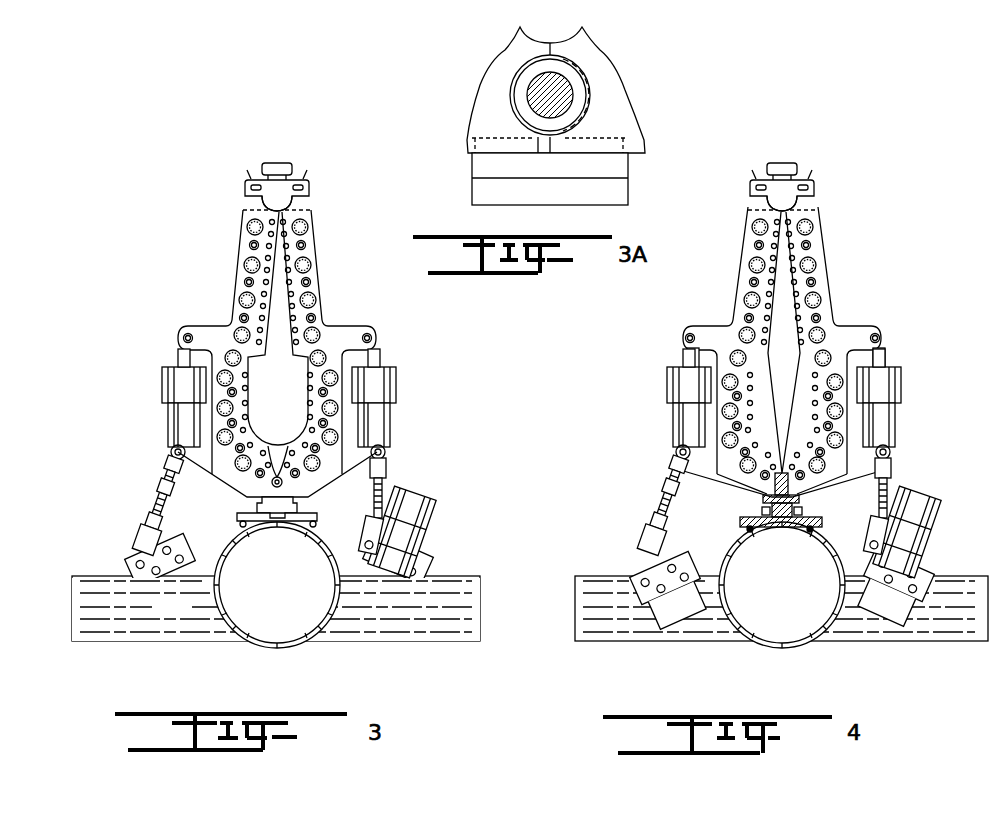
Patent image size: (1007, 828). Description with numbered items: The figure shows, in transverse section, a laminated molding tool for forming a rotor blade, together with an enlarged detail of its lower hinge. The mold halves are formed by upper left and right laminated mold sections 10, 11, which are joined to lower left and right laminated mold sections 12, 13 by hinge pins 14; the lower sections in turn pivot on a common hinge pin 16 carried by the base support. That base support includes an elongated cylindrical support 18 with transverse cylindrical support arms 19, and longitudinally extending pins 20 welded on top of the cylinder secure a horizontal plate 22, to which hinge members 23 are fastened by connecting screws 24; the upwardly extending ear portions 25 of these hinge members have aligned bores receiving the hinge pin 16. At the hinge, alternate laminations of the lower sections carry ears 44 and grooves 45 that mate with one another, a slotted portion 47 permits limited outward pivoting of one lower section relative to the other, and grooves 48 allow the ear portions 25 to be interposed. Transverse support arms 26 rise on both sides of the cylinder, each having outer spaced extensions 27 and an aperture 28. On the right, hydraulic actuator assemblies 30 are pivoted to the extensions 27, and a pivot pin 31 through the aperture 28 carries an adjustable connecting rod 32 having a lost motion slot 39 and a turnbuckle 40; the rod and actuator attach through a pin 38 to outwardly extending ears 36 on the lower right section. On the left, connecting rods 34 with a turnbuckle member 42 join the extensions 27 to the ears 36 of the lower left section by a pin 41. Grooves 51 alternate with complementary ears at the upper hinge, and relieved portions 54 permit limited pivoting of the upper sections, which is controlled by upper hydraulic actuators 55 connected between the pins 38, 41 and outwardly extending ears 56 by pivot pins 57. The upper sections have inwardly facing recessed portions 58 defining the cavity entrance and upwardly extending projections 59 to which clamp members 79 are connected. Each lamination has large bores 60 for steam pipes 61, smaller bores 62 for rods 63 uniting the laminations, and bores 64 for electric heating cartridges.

In FIG. 3, the upper left laminated mold section 10 is at (243, 230).
In FIG. 4, the upper left laminated mold section 10 is at (742, 340).
In FIG. 3, the upper right laminated mold section 11 is at (318, 225).
In FIG. 4, the upper right laminated mold section 11 is at (849, 337).
In FIG. 3, the lower left laminated mold section 12 is at (218, 408).
In FIG. 4, the lower left laminated mold section 12 is at (674, 413).
In FIG. 3, the lower right laminated mold section 13 is at (340, 408).
In FIG. 4, the lower right laminated mold section 13 is at (892, 405).
In FIG. 4, the hinge pins 14 is at (777, 357).
In FIG. 3, the common hinge pin 16 is at (283, 482).
In FIG. 3A, the common hinge pin 16 is at (565, 87).
In FIG. 4, the common hinge pin 16 is at (810, 516).
In FIG. 3, the elongated cylindrical support 18 is at (300, 640).
In FIG. 4, the elongated cylindrical support 18 is at (783, 598).
In FIG. 3, the transverse cylindrical support arms 19 is at (476, 579).
In FIG. 4, the transverse cylindrical support arms 19 is at (785, 625).
In FIG. 3, the longitudinally extending pins 20 is at (241, 525).
In FIG. 4, the longitudinally extending pins 20 is at (778, 530).
In FIG. 3, the horizontal plate 22 is at (312, 516).
In FIG. 4, the horizontal plate 22 is at (752, 515).
In FIG. 3, the hinge members 23 is at (257, 506).
In FIG. 3A, the hinge members 23 is at (630, 178).
In FIG. 4, the connecting screws 24 is at (754, 498).
In FIG. 3A, the upwardly extending ear portions 25 is at (587, 110).
In FIG. 4, the upwardly extending ear portions 25 is at (822, 474).
In FIG. 3, the transverse support arms 26 is at (170, 552).
In FIG. 4, the transverse support arms 26 is at (758, 602).
In FIG. 3, the outer spaced extensions 27 is at (140, 566).
In FIG. 4, the outer spaced extensions 27 is at (792, 576).
In FIG. 3, the aperture 28 is at (160, 525).
In FIG. 4, the aperture 28 is at (643, 520).
In FIG. 3, the hydraulic actuator assemblies 30 is at (405, 505).
In FIG. 4, the hydraulic actuator assemblies 30 is at (921, 532).
In FIG. 3, the pivot pin 31 is at (380, 548).
In FIG. 4, the pivot pin 31 is at (929, 547).
In FIG. 3, the adjustable connecting rod 32 is at (388, 462).
In FIG. 4, the adjustable connecting rod 32 is at (917, 488).
In FIG. 3, the connecting rods 34 is at (165, 500).
In FIG. 4, the connecting rods 34 is at (641, 505).
In FIG. 3, the outwardly extending ears 36 is at (188, 462).
In FIG. 4, the outwardly extending ears 36 is at (787, 453).
In FIG. 3, the pin 38 is at (385, 452).
In FIG. 4, the pin 38 is at (913, 437).
In FIG. 3, the lost motion slot 39 is at (378, 533).
In FIG. 4, the lost motion slot 39 is at (916, 533).
In FIG. 3, the turnbuckle 40 is at (385, 490).
In FIG. 4, the turnbuckle 40 is at (939, 478).
In FIG. 3, the pin 41 is at (171, 450).
In FIG. 4, the pin 41 is at (655, 439).
In FIG. 3, the turnbuckle member 42 is at (163, 485).
In FIG. 4, the turnbuckle member 42 is at (649, 472).
In FIG. 3A, the ears 44 is at (518, 110).
In FIG. 3A, the grooves 45 is at (510, 85).
In FIG. 3A, the slotted portion 47 is at (541, 150).
In FIG. 4, the grooves 48 is at (781, 490).
In FIG. 4, the grooves 51 is at (715, 328).
In FIG. 3, the relieved portions 54 is at (200, 352).
In FIG. 4, the relieved portions 54 is at (651, 352).
In FIG. 3, the upper hydraulic actuators 55 is at (162, 378).
In FIG. 4, the upper hydraulic actuators 55 is at (783, 398).
In FIG. 3, the outwardly extending ears 56 is at (355, 330).
In FIG. 4, the outwardly extending ears 56 is at (795, 317).
In FIG. 3, the pivot pins 57 is at (374, 338).
In FIG. 4, the pivot pins 57 is at (781, 332).
In FIG. 3, the inwardly facing recessed portions 58 is at (262, 206).
In FIG. 4, the inwardly facing recessed portions 58 is at (754, 203).
In FIG. 3, the upwardly extending projections 59 is at (247, 186).
In FIG. 4, the upwardly extending projections 59 is at (809, 190).
In FIG. 3, the large bores 60 is at (247, 300).
In FIG. 4, the large bores 60 is at (739, 230).
In FIG. 3, the steam pipes 61 is at (308, 262).
In FIG. 4, the steam pipes 61 is at (732, 258).
In FIG. 4, the smaller bores 62 is at (843, 298).
In FIG. 3, the rods 63 is at (249, 282).
In FIG. 4, the rods 63 is at (784, 271).
In FIG. 3, the bores 64 is at (258, 376).
In FIG. 4, the bores 64 is at (804, 330).
In FIG. 3, the clamp members 79 is at (283, 165).
In FIG. 4, the clamp members 79 is at (788, 153).